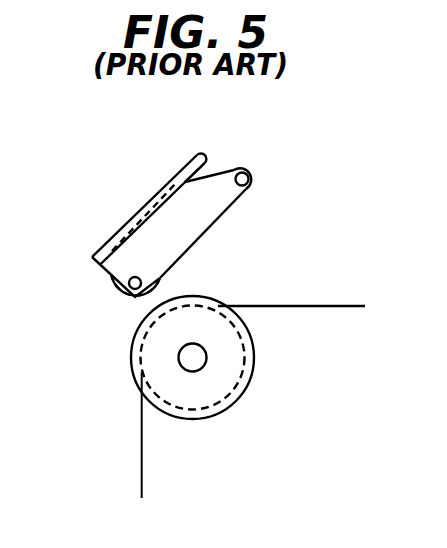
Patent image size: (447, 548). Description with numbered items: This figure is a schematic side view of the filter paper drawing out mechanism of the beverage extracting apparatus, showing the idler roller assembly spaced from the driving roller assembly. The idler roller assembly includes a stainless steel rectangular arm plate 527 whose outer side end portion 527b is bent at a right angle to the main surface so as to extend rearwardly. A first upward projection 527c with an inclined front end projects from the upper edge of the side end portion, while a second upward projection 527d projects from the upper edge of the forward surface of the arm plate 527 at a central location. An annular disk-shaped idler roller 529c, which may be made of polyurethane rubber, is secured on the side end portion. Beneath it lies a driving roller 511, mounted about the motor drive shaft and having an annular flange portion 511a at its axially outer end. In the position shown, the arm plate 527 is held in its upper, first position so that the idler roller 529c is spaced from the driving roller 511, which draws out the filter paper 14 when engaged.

The arm plate 527 is at (142, 207).
The second upward projection 527d is at (198, 160).
The first upward projection 527c is at (247, 188).
The outer side end portion 527b is at (193, 240).
The idler roller 529c is at (113, 298).
The driving roller 511 is at (248, 378).
The annular flange portion 511a is at (135, 372).
The filter paper 14 is at (352, 306).